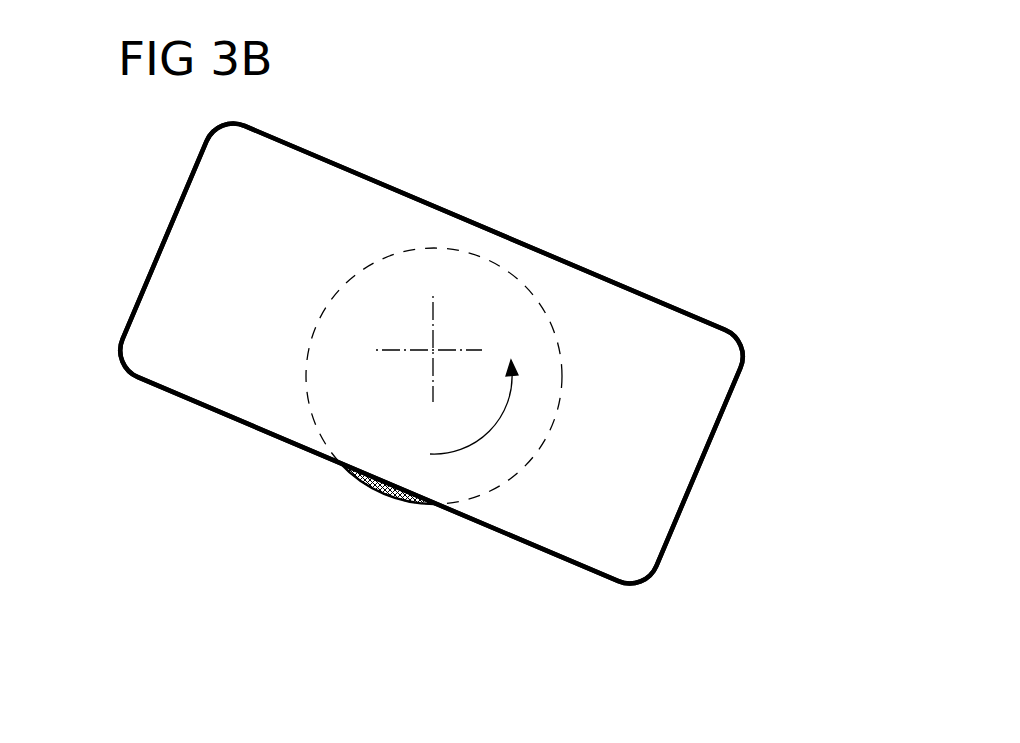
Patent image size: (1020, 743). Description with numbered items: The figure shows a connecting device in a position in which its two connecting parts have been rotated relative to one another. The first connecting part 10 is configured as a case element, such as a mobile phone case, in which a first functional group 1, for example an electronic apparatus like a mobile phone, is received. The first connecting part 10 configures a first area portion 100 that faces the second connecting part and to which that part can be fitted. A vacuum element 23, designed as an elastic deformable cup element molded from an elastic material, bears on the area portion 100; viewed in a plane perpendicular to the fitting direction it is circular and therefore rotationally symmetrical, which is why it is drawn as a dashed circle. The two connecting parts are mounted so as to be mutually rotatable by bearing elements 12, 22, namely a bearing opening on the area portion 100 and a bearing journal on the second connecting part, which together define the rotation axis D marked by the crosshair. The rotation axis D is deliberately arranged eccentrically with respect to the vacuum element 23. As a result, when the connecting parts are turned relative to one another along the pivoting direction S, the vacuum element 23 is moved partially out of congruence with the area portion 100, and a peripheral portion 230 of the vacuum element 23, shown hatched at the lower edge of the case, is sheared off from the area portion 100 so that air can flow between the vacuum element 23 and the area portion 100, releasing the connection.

The first functional group 1 is at (678, 308).
The first connecting part 10 is at (603, 272).
The first area portion 100 is at (697, 478).
The bearing element 12 is at (455, 272).
The bearing element 22 is at (435, 350).
The vacuum element 23 is at (507, 480).
The peripheral portion 230 is at (383, 493).
The rotation axis D is at (428, 354).
The pivoting direction S is at (474, 407).